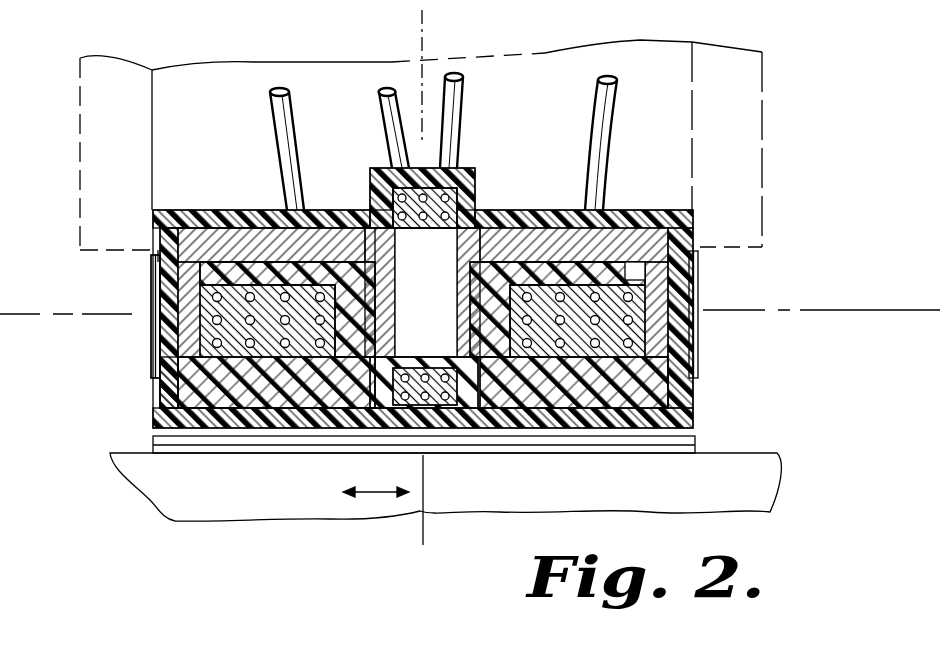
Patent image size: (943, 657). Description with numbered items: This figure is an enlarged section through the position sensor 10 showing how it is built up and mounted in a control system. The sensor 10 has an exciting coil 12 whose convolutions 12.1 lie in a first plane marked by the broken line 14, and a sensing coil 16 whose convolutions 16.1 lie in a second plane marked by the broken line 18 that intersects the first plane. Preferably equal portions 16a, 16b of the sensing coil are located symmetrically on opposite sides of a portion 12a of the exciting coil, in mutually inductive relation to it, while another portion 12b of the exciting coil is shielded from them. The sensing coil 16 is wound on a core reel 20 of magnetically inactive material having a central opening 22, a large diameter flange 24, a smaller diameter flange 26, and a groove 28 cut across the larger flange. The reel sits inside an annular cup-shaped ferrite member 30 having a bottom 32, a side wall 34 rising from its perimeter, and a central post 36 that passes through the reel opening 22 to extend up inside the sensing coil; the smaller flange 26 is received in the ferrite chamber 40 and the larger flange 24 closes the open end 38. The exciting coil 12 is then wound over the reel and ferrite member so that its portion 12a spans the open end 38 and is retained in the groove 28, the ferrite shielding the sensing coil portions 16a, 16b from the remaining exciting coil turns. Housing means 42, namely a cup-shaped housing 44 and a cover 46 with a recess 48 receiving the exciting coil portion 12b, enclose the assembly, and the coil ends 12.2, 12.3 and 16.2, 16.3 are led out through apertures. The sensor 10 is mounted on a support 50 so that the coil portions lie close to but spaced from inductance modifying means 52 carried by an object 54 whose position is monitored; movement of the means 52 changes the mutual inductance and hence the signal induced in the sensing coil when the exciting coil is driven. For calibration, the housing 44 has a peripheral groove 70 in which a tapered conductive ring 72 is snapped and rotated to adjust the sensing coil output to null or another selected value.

The position sensor 10 is at (793, 238).
The exciting coil 12 is at (458, 188).
The convolutions of the exciting coil 12.1 is at (452, 168).
The end of the exciting coil 12.2 is at (405, 100).
The end of the exciting coil 12.3 is at (453, 75).
The portion of the exciting coil 12a is at (387, 422).
The other portion of the exciting coil 12b is at (374, 163).
The first plane 14 is at (428, 36).
The sensing coil 16 is at (180, 325).
The convolutions of the sensing coil 16.1 is at (218, 358).
The end of the sensing coil 16.2 is at (282, 89).
The end of the sensing coil 16.3 is at (606, 105).
The portion of the sensing coil 16a is at (163, 283).
The portion of the sensing coil 16b is at (662, 284).
The plane of the sensing coil 18 is at (803, 310).
The core reel 20 is at (193, 385).
The central opening 22 is at (476, 392).
The large diameter flange 24 is at (282, 398).
The smaller diameter flange 26 is at (250, 266).
The groove 28 is at (440, 406).
The cup-shaped member 30 is at (200, 250).
The bottom 32 is at (283, 246).
The side wall 34 is at (160, 315).
The post 36 is at (398, 318).
The open end 38 is at (580, 370).
The ferrite chamber 40 is at (397, 268).
The housing means 42 is at (714, 376).
The cup-shaped housing 44 is at (668, 418).
The housing cover 46 is at (557, 209).
The recess 48 is at (462, 195).
The support 50 is at (762, 74).
The inductance modifying means 52 is at (700, 448).
The object 54 is at (445, 487).
The peripheral groove 70 is at (158, 255).
The additional inductance modifying means 72 is at (140, 377).